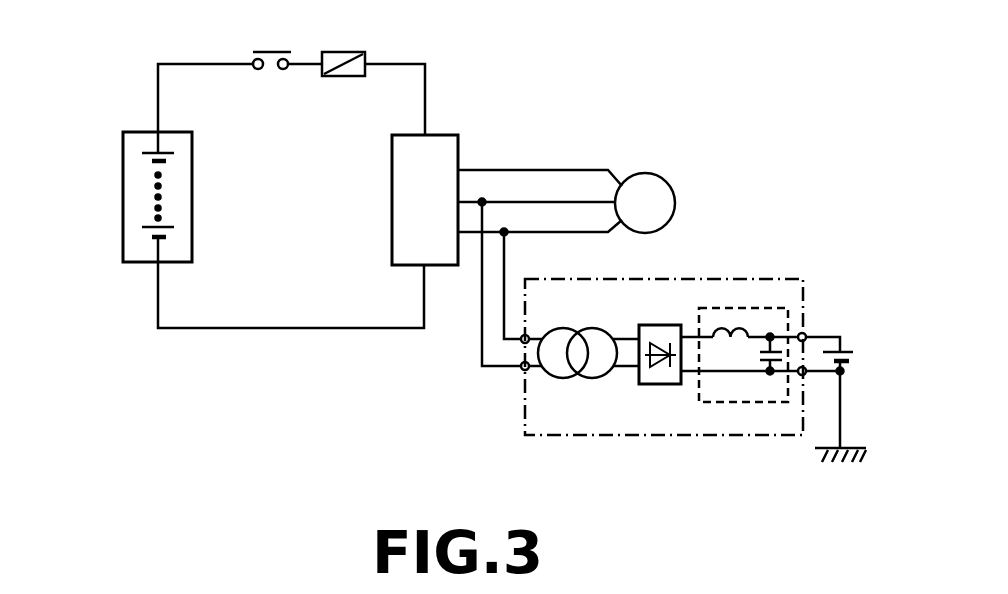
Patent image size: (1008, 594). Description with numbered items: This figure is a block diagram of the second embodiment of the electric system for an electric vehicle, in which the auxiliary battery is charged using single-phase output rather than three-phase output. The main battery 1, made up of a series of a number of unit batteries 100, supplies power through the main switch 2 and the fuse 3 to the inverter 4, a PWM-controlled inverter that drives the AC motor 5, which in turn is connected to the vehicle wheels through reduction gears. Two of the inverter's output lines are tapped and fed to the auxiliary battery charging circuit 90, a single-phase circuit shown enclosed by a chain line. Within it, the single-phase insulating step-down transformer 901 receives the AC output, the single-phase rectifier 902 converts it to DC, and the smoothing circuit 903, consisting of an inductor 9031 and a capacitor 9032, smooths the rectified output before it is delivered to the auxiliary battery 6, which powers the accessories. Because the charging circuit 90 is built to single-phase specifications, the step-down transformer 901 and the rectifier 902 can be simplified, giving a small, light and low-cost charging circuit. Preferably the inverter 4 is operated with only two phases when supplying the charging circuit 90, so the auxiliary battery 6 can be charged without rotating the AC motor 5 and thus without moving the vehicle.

The main battery 1 is at (130, 131).
The unit batteries 100 is at (148, 157).
The main switch 2 is at (266, 52).
The fuse 3 is at (352, 53).
The inverter 4 is at (447, 135).
The AC motor 5 is at (664, 181).
The auxiliary battery 6 is at (852, 357).
The auxiliary battery charging circuit 90 is at (664, 279).
The step-down transformer 901 is at (578, 378).
The rectifier 902 is at (652, 385).
The smoothing circuit 903 is at (752, 308).
The inductor 9031 is at (722, 342).
The capacitor 9032 is at (773, 353).